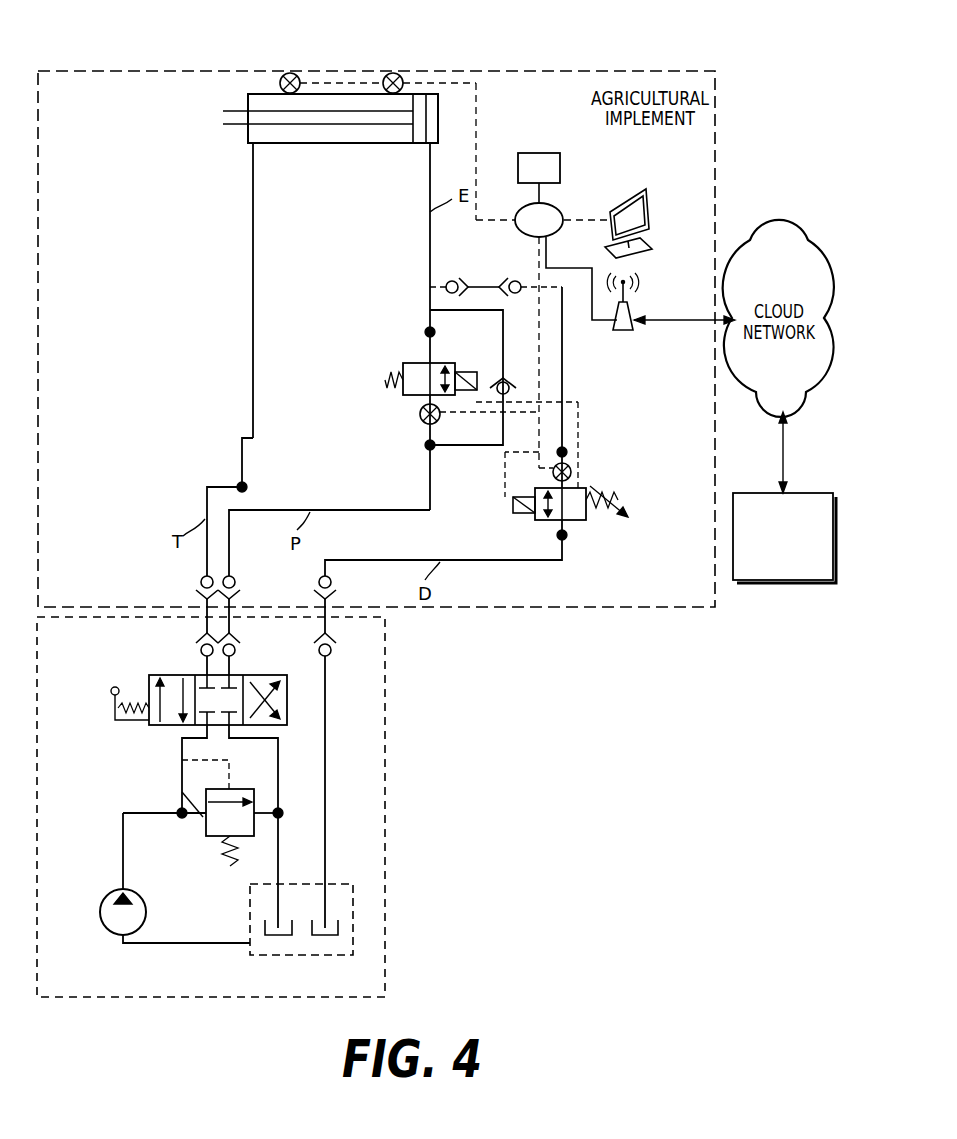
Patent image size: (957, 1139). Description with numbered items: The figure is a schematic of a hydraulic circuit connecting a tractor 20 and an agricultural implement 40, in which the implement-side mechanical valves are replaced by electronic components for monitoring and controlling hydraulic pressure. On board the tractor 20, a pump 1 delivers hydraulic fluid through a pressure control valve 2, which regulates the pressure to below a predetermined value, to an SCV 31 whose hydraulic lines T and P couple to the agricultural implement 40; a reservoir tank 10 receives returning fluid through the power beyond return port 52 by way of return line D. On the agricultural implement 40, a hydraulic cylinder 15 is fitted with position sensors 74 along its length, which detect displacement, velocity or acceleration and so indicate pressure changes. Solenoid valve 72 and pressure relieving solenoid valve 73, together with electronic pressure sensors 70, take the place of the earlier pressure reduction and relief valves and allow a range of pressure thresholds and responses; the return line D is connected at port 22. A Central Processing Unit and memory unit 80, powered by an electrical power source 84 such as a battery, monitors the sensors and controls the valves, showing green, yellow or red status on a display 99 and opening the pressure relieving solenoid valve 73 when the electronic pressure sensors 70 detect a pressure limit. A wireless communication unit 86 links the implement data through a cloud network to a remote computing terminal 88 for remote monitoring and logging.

The pump 1 is at (102, 910).
The pressure control valve 2 is at (203, 827).
The reservoir tank 10 is at (355, 928).
The hydraulic cylinder 15 is at (377, 145).
The tractor 20 is at (117, 998).
The port 22 is at (490, 283).
The SCV 31 is at (170, 727).
The agricultural implement 40 is at (577, 45).
The power beyond return port 52 is at (327, 624).
The electronic pressure sensors 70 is at (426, 423).
The solenoid valve 72 is at (415, 363).
The pressure relieving solenoid valve 73 is at (511, 506).
The position sensors 74 is at (386, 72).
The Central Processing Unit and memory unit 80 is at (560, 206).
The electrical power source 84 is at (560, 168).
The wireless communication unit 86 is at (638, 332).
The remote computing terminal 88 is at (770, 584).
The display 99 is at (656, 204).